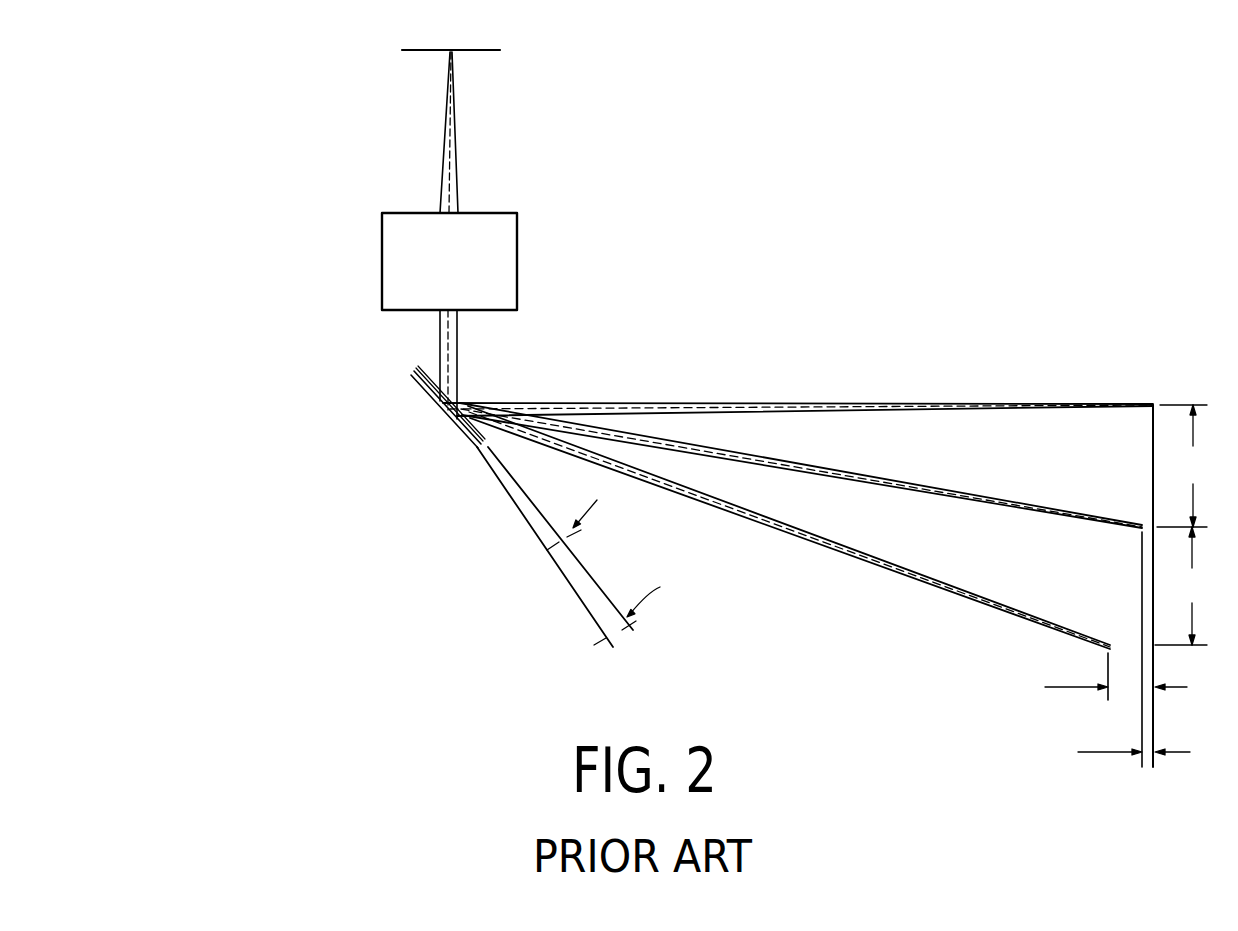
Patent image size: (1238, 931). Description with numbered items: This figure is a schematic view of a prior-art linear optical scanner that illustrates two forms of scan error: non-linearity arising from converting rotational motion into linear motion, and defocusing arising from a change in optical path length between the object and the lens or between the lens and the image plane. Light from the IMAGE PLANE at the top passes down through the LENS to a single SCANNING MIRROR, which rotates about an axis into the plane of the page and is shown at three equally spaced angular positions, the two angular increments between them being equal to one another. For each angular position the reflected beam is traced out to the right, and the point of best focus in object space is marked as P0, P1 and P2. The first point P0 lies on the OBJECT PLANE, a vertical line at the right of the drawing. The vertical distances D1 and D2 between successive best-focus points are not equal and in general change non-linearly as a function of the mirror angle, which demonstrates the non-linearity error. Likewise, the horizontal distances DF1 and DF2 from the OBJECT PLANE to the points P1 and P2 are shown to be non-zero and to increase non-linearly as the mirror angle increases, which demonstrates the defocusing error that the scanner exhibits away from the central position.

The image plane IMAGE PLANE is at (505, 48).
The lens LENS is at (517, 268).
The scanning mirror SCANNING MIRROR is at (426, 385).
The object plane OBJECT PLANE is at (1148, 498).
The point of best focus p0 P0 is at (1152, 447).
The point of best focus p1 P1 is at (1140, 562).
The point of best focus p2 P2 is at (1104, 670).
The vertical distance between p0 and p1 D1 is at (1182, 466).
The vertical distance between p1 and p2 D2 is at (1182, 586).
The horizontal distance df1 DF1 is at (1106, 754).
The horizontal distance df2 DF2 is at (1082, 691).